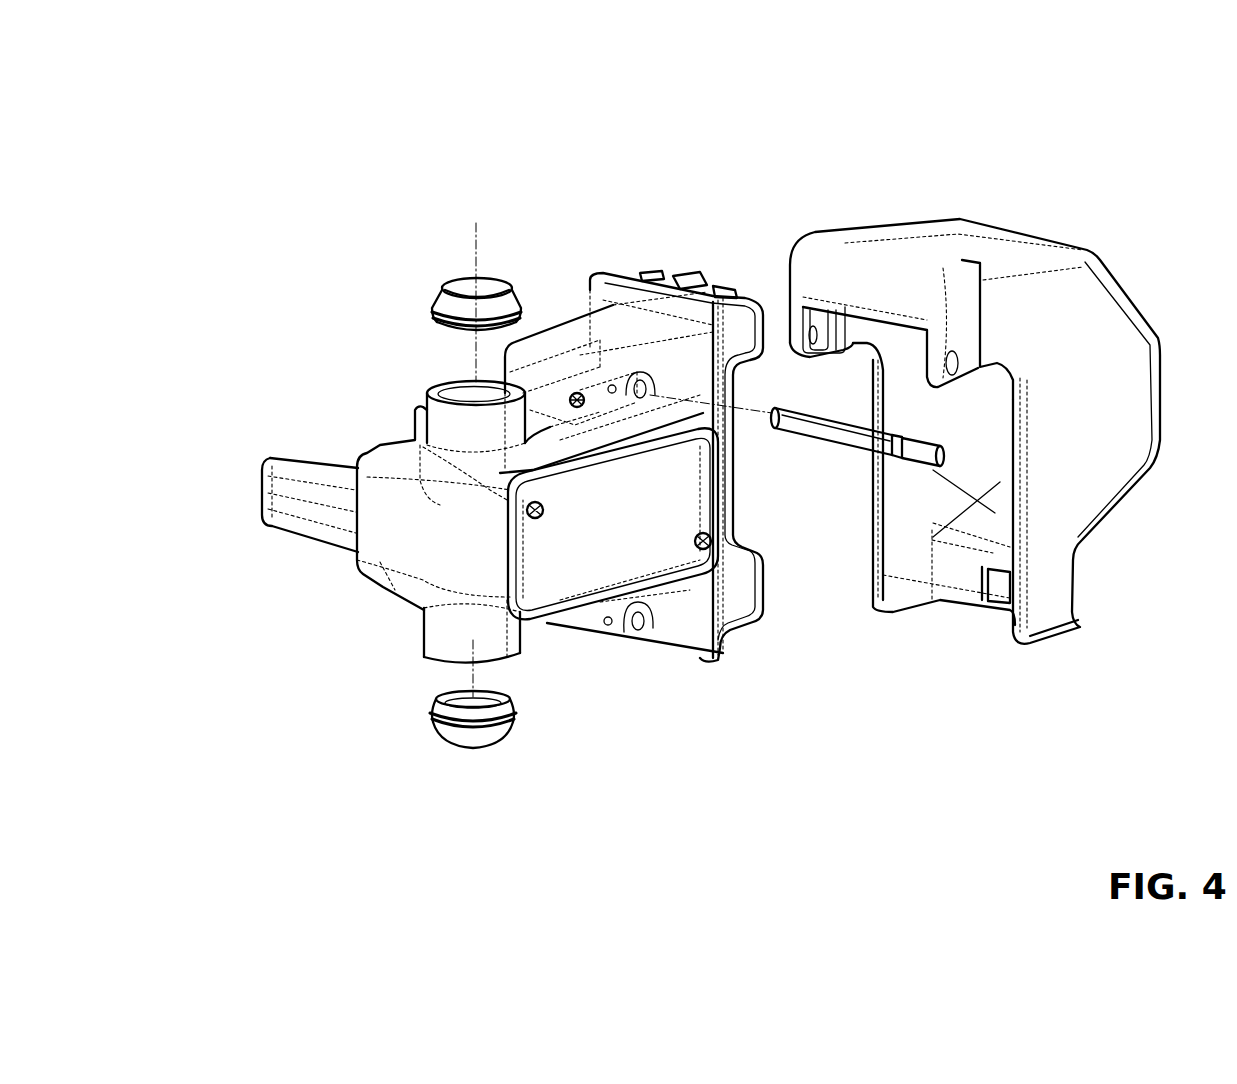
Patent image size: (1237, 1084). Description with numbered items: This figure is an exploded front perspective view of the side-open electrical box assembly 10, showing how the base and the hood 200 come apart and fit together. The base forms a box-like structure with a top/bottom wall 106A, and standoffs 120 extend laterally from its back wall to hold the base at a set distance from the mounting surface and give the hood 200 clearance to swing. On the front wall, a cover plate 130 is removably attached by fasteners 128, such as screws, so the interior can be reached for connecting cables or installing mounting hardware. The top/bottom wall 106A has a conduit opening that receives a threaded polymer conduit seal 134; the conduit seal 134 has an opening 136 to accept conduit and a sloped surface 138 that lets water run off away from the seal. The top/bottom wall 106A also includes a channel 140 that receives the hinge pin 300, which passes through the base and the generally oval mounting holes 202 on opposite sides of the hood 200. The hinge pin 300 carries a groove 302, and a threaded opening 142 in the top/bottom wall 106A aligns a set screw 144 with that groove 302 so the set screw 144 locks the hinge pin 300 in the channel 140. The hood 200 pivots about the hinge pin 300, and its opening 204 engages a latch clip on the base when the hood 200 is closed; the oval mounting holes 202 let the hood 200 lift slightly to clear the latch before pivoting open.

The side-open electrical box assembly 10 is at (264, 137).
The top/bottom wall 106A is at (575, 334).
The standoffs 120 is at (268, 458).
The fasteners 128 is at (530, 510).
The cover plate 130 is at (706, 483).
The conduit seal 134 is at (420, 339).
The opening 136 is at (396, 500).
The sloped surface 138 is at (447, 307).
The channel 140 is at (642, 380).
The threaded opening 142 is at (612, 384).
The set screw 144 is at (576, 396).
The hood 200 is at (978, 470).
The mounting holes 202 is at (808, 306).
The opening 204 is at (989, 620).
The hinge pin 300 is at (835, 595).
The groove 302 is at (892, 450).